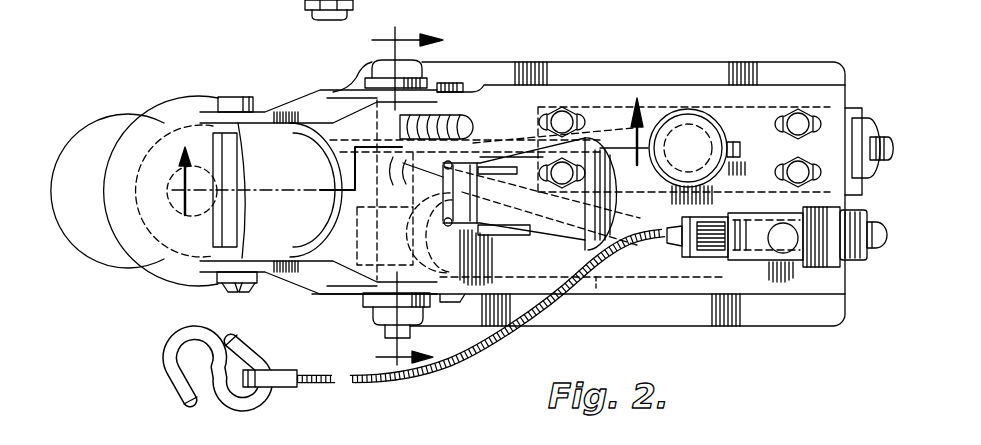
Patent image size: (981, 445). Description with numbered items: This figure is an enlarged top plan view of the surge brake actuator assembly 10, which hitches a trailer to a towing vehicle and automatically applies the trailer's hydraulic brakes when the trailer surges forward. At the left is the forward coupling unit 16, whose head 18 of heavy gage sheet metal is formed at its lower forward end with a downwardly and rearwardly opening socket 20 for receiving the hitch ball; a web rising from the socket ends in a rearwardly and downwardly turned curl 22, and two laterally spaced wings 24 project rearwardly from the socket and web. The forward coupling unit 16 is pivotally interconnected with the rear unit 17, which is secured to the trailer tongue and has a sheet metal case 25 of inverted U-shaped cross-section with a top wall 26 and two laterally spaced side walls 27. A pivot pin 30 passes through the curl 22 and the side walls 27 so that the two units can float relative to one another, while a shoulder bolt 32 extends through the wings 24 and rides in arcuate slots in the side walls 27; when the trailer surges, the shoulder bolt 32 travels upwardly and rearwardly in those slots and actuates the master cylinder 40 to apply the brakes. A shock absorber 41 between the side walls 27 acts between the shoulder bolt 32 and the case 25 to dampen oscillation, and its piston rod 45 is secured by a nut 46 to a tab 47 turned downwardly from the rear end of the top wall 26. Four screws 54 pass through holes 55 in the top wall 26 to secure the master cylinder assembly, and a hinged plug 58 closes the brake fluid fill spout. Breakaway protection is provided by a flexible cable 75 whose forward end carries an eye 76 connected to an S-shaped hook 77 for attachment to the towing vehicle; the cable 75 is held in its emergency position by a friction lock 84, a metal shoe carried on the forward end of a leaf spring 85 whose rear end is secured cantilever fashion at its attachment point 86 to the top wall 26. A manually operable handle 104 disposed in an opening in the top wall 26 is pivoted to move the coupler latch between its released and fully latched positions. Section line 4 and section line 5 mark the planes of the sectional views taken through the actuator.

The surge brake actuator assembly 10 is at (145, 293).
The forward coupling unit 16 is at (135, 98).
The rear unit 17 is at (626, 65).
The head 18 is at (132, 233).
The socket 20 is at (145, 178).
The curl 22 is at (235, 222).
The wings 24 is at (290, 100).
The case 25 is at (498, 97).
The top wall 26 is at (830, 100).
The side walls 27 is at (548, 97).
The pivot pin 30 is at (220, 100).
The shoulder bolt 32 is at (407, 323).
The master cylinder 40 is at (857, 115).
The shock absorber 41 is at (597, 292).
The rod 45 is at (887, 236).
The nut 46 is at (868, 258).
The tab 47 is at (838, 270).
The screws 54 is at (565, 117).
The holes 55 is at (777, 118).
The hinged plug 58 is at (693, 120).
The flexible cable 75 is at (500, 343).
The eye 76 is at (290, 370).
The S-shaped hook 77 is at (168, 383).
The friction lock 84 is at (700, 258).
The leaf spring 85 is at (757, 258).
The cantilever attachment point 86 is at (786, 245).
The handle 104 is at (588, 240).
The section line 4- 4 is at (406, 173).
The section line 5- 5 is at (391, 199).